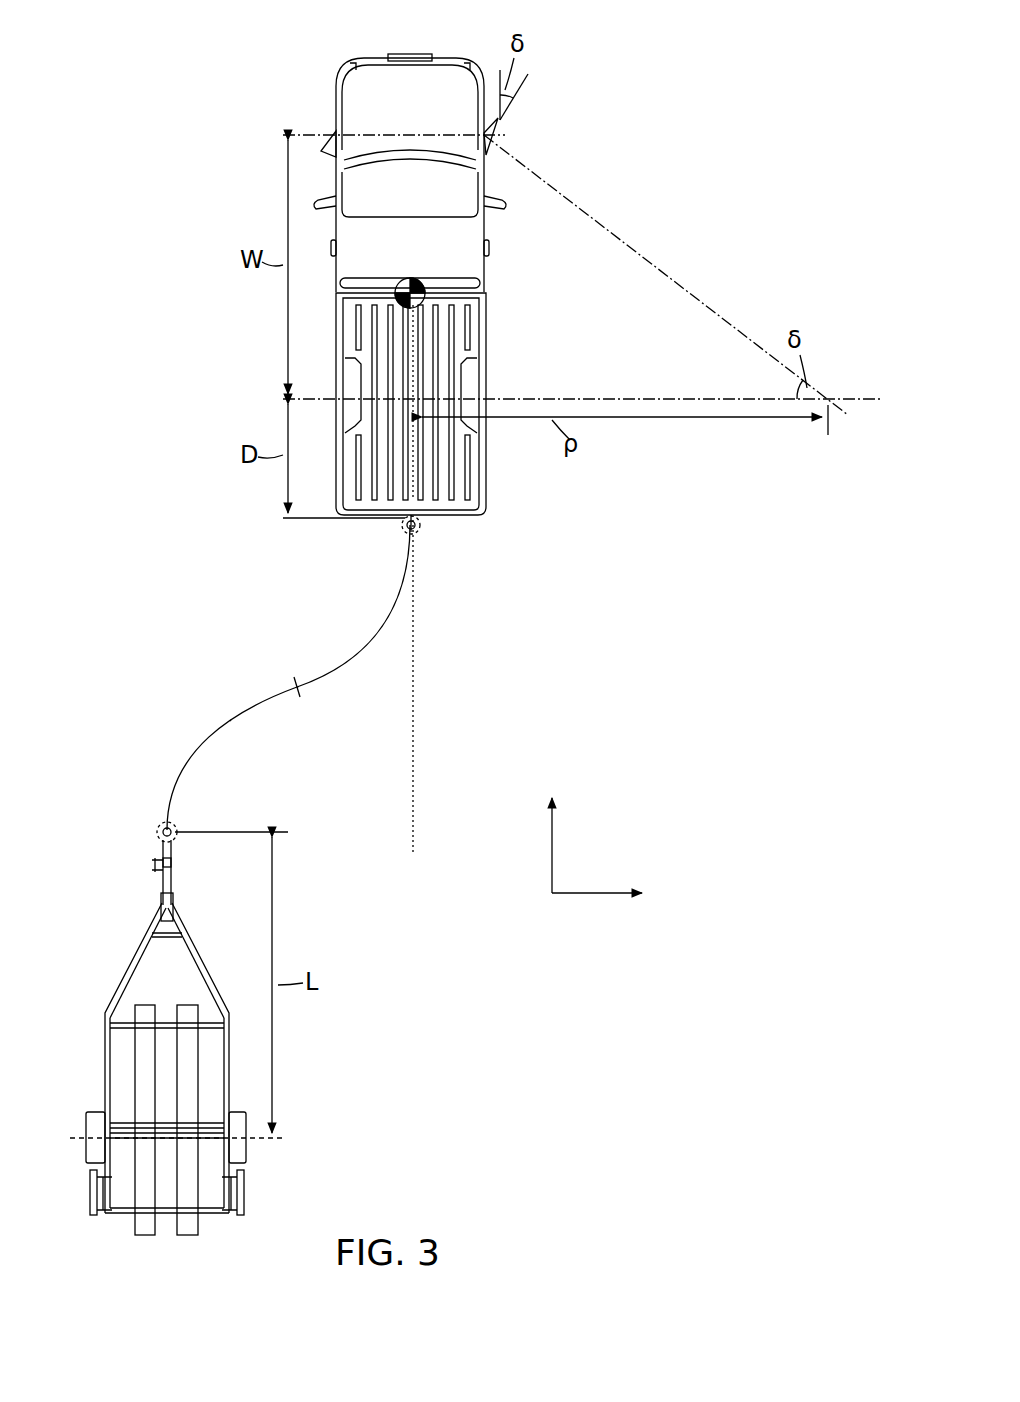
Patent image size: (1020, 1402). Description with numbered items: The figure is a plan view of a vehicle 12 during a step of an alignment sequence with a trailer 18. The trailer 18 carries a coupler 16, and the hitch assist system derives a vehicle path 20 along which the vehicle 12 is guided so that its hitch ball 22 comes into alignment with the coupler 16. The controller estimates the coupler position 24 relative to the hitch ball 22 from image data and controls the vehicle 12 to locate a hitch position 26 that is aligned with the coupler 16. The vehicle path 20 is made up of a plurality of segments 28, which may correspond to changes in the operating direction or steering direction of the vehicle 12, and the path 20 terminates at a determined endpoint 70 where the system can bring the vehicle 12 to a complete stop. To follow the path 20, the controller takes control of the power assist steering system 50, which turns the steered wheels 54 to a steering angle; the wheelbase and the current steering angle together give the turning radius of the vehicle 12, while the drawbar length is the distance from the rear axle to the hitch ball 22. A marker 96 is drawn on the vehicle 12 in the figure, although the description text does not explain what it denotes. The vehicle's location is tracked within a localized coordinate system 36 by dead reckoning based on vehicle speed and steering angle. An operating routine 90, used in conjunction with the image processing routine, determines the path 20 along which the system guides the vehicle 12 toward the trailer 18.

The vehicle 12 is at (318, 56).
The steered wheels 54 is at (331, 146).
The power assist steering system 50 is at (500, 170).
The center of gravity 96 is at (398, 300).
The hitch ball 22 is at (402, 530).
The endpoint 70 is at (420, 525).
The hitch position 26 is at (417, 536).
The segments 28 is at (363, 655).
The operating routine 90 is at (248, 645).
The vehicle path 20 is at (205, 690).
The localized coordinate system 36 is at (603, 918).
The trailer 18 is at (103, 1052).
The coupler 16 is at (176, 840).
The coupler position 24 is at (180, 828).